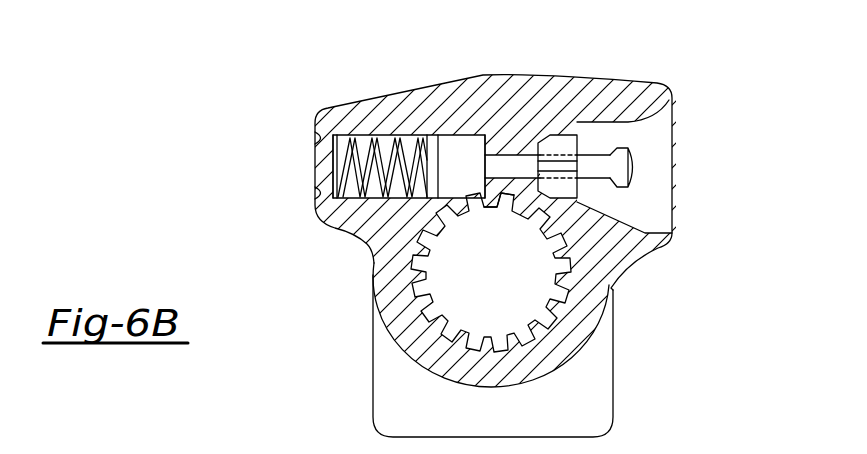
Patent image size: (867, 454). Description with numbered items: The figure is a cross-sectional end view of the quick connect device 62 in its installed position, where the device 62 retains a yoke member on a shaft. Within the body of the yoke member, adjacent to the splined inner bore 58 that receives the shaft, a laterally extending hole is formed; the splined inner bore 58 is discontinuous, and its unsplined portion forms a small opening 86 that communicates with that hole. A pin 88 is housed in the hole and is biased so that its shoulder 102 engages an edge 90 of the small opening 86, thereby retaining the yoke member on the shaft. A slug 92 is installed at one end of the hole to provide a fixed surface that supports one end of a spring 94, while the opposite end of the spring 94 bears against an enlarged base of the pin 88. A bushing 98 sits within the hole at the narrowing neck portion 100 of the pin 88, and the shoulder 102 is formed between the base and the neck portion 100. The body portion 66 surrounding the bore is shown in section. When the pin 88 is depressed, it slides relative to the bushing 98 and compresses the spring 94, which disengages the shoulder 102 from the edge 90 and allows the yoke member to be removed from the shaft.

The device 62 is at (313, 88).
The housing body portion 66 is at (367, 238).
The splined inner bore 58 is at (430, 306).
The small opening 86 is at (469, 223).
The edge 90 is at (488, 182).
The spring 94 is at (350, 140).
The slug 92 is at (332, 168).
The shoulder 102 is at (495, 148).
The neck portion 100 is at (518, 167).
The bushing 98 is at (558, 143).
The pin 88 is at (634, 162).